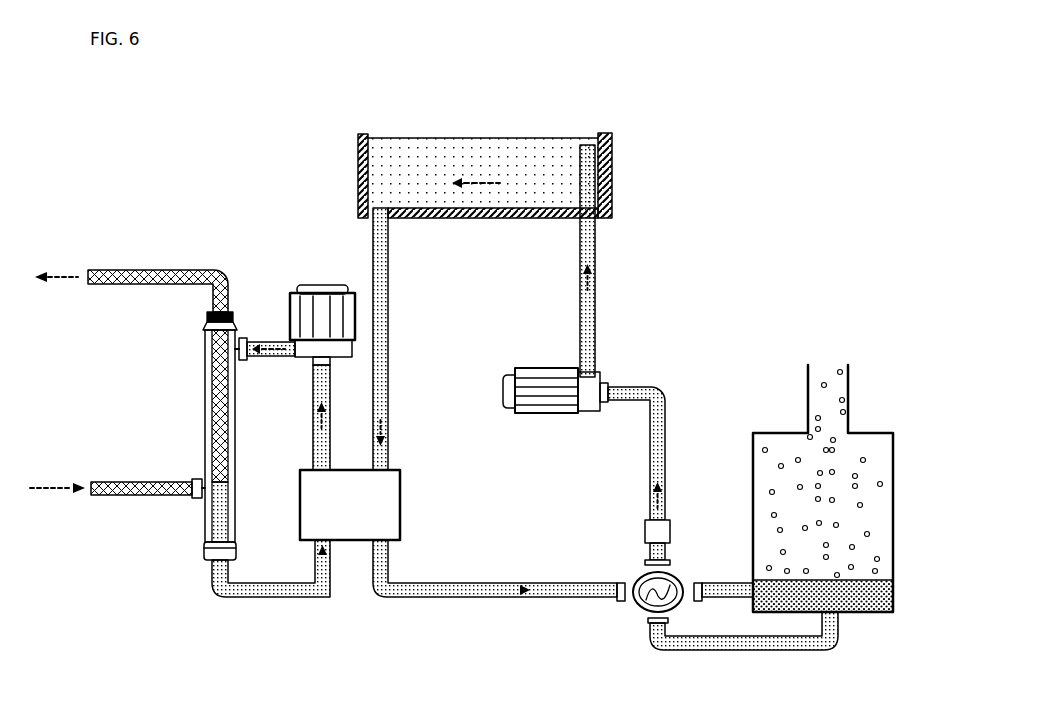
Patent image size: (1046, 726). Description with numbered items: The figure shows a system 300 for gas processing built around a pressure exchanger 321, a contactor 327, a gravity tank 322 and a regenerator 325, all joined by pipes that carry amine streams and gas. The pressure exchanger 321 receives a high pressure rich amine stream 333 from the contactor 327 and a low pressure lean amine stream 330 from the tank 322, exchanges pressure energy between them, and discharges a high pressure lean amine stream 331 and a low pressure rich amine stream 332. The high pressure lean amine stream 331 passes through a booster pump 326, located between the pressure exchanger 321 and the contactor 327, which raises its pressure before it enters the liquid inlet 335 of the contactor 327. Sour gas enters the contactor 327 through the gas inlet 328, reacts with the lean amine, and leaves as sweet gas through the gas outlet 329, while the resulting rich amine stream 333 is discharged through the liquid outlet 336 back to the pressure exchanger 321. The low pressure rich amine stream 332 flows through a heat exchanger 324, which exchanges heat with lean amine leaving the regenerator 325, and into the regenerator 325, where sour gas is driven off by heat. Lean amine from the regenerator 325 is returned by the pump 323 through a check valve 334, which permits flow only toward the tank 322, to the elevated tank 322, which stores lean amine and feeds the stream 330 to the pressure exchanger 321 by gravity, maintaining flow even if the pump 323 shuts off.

The system for gas processing 300 is at (660, 109).
The pressure exchanger 321 is at (348, 505).
The gravity tank 322 is at (402, 177).
The pump 323 is at (548, 368).
The heat exchanger 324 is at (643, 595).
The regenerator 325 is at (793, 510).
The booster pump 326 is at (325, 285).
The contactor 327 is at (220, 417).
The gas inlet 328 is at (125, 497).
The gas outlet 329 is at (140, 274).
The low pressure lean amine stream 330 is at (385, 458).
The high pressure lean amine stream 331 is at (322, 453).
The low pressure rich amine stream 332 is at (387, 562).
The high pressure rich amine stream 333 is at (315, 573).
The check valve 334 is at (663, 533).
The liquid inlet 335 is at (247, 340).
The liquid outlet 336 is at (210, 560).